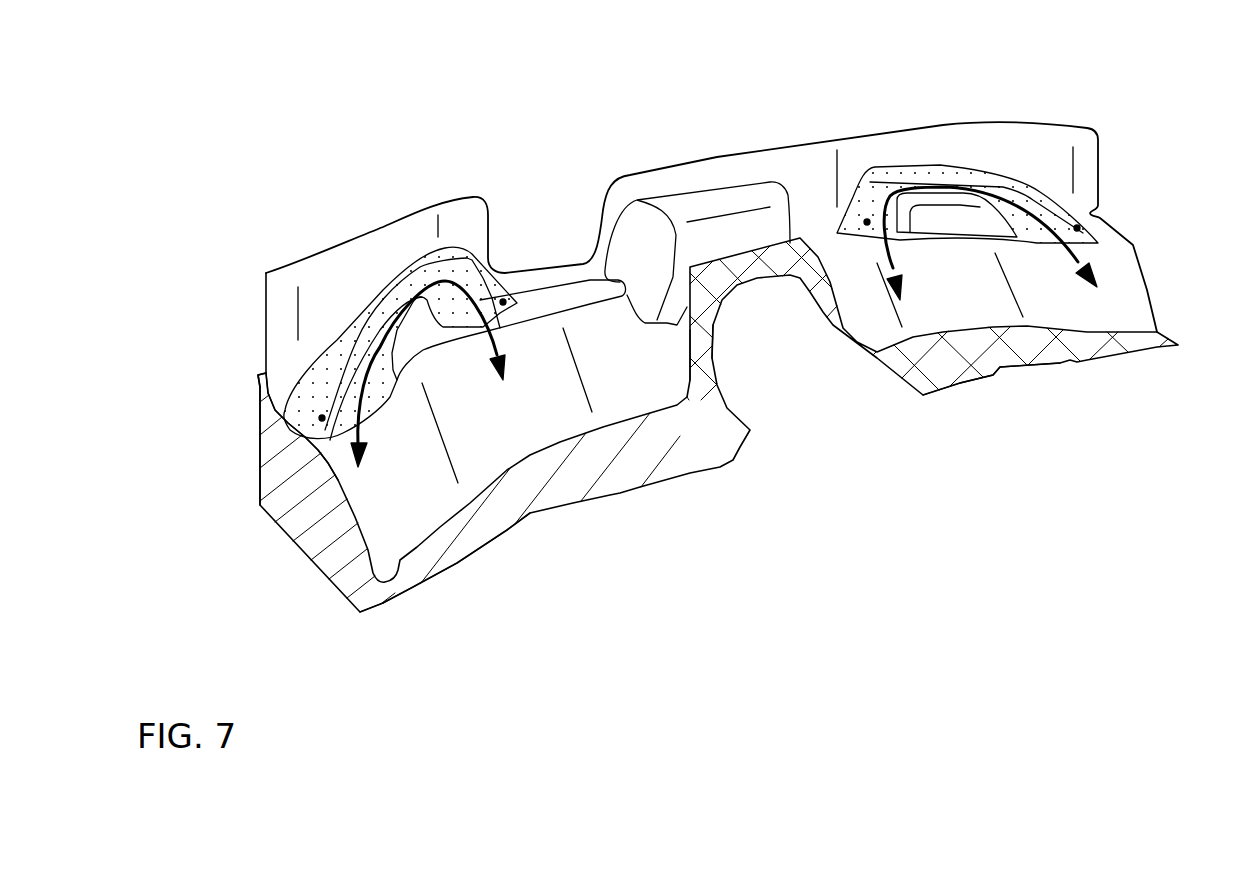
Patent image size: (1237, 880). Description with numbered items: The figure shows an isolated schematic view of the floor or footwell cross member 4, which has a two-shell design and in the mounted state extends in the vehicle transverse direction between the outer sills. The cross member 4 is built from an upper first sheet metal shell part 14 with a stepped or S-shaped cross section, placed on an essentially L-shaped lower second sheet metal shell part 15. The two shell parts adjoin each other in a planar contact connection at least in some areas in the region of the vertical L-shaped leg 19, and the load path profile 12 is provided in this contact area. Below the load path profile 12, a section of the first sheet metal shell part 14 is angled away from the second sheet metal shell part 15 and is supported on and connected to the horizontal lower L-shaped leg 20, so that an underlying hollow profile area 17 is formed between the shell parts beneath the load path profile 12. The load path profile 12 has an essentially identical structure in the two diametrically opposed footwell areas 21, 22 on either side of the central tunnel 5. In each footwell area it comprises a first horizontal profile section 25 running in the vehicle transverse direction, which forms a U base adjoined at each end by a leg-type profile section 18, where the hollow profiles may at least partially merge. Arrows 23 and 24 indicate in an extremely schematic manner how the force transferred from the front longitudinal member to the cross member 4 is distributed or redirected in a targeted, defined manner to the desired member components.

The cross member 4 is at (780, 135).
The central tunnel 5 is at (752, 305).
The load path profile 12 is at (462, 243).
The first sheet metal shell part 14 is at (302, 563).
The second sheet metal shell part 15 is at (384, 250).
The hollow profile area 17 is at (313, 460).
The leg-type profile section 18 is at (505, 302).
The vertical L-shaped leg 19 is at (262, 430).
The horizontal lower L-shaped leg 20 is at (350, 578).
The footwell area 21 is at (547, 470).
The footwell area 22 is at (1017, 340).
The arrow 23 is at (360, 398).
The arrow 24 is at (893, 265).
The first horizontal profile section 25 is at (375, 293).